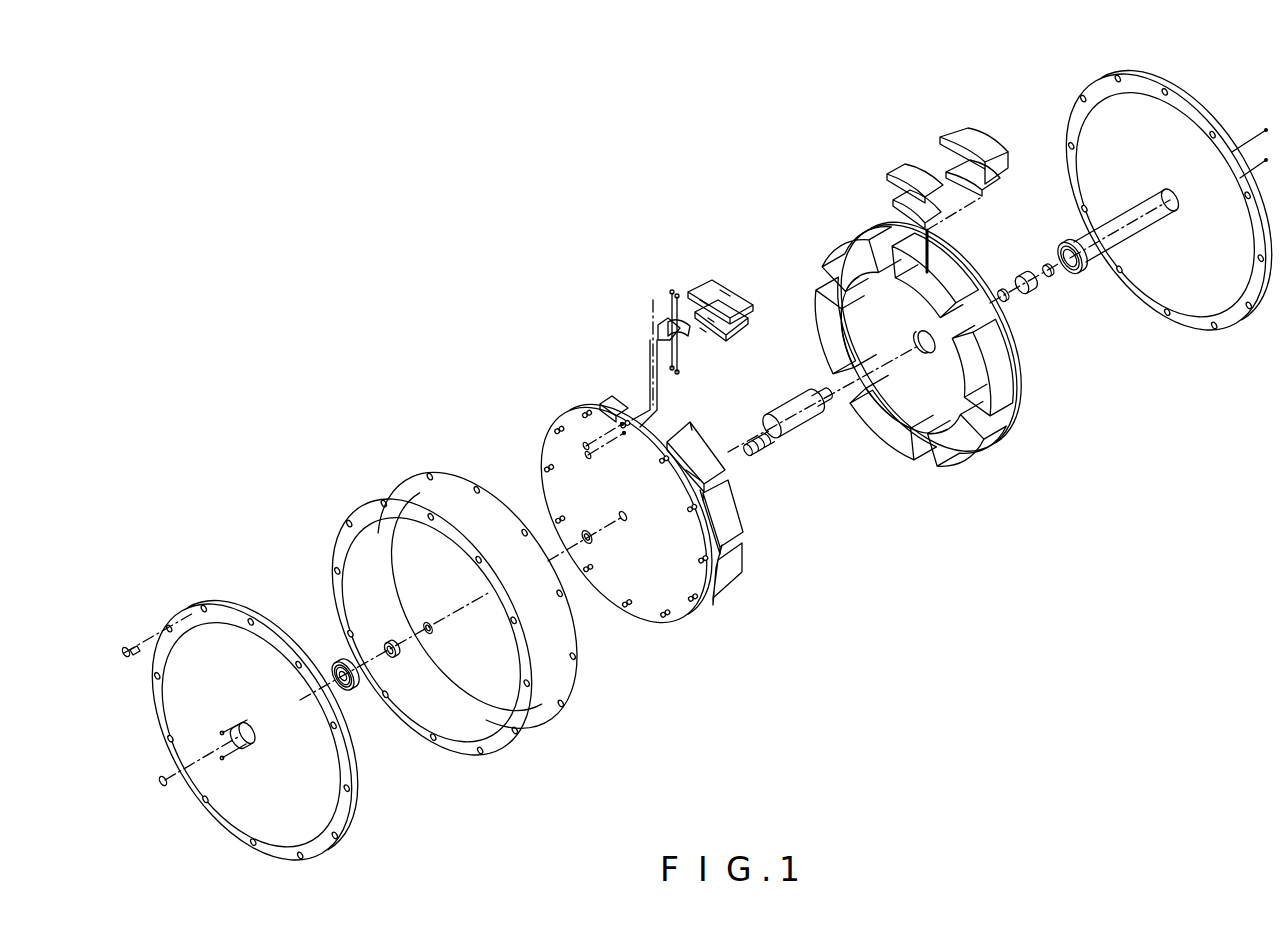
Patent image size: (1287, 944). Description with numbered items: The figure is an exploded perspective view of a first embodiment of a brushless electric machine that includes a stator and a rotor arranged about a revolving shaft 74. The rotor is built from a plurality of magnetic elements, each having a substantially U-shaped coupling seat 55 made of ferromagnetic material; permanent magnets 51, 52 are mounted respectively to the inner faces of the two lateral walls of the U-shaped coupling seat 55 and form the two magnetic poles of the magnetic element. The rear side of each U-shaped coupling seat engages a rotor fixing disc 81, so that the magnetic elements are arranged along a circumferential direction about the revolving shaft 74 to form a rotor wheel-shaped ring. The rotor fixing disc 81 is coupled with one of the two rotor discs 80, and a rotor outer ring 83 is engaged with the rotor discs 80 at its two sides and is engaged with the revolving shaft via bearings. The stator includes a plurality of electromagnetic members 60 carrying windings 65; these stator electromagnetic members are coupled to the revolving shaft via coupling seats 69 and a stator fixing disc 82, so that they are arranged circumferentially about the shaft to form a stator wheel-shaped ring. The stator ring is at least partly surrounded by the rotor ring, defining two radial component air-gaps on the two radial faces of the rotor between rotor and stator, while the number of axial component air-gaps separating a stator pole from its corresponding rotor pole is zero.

The rotor disc 80 is at (217, 652).
The rotor outer ring 83 is at (450, 502).
The stator fixing disc 82 is at (563, 442).
The coupling seat 69 is at (667, 323).
The electromagnetic member 60 is at (698, 273).
The winding 65 is at (698, 298).
The revolving shaft 74 is at (788, 418).
The rotor fixing disc 81 is at (910, 248).
The permanent magnet 51 is at (908, 172).
The permanent magnet 52 is at (913, 200).
The U-shaped coupling seat 55 is at (972, 137).